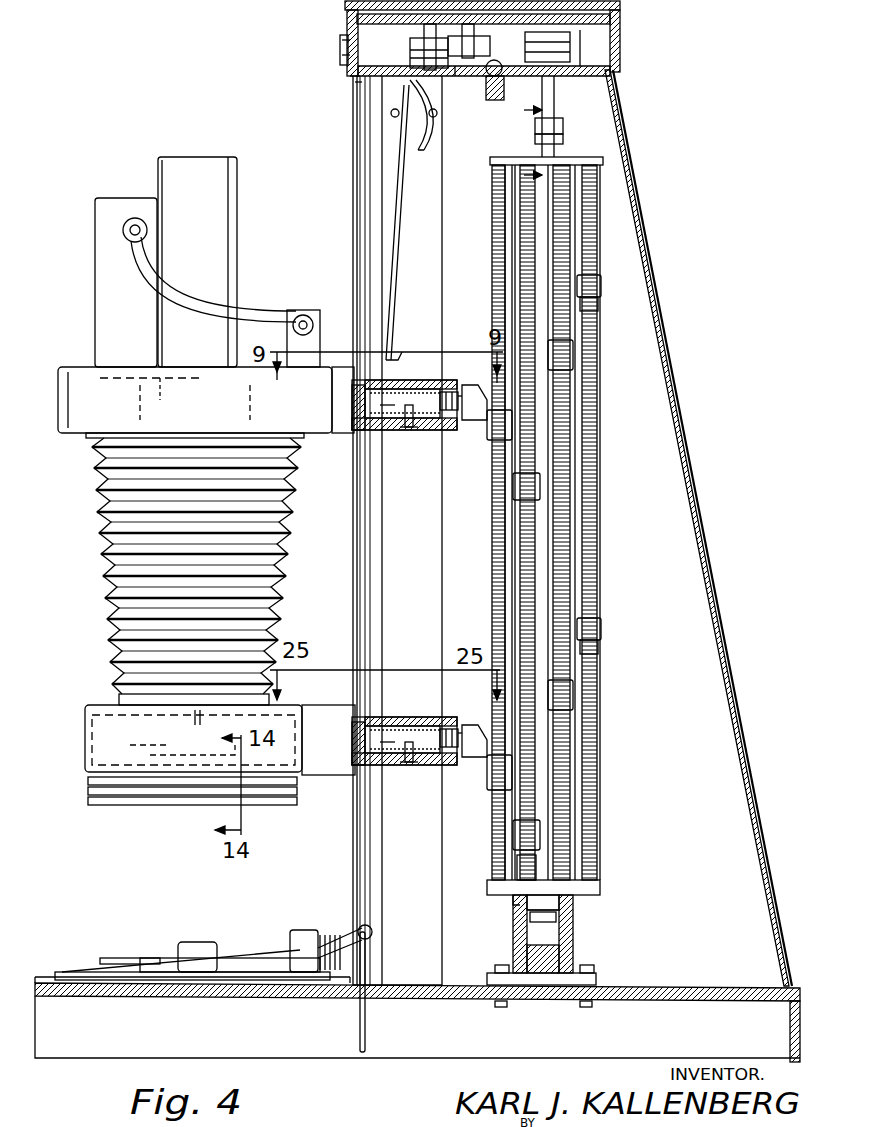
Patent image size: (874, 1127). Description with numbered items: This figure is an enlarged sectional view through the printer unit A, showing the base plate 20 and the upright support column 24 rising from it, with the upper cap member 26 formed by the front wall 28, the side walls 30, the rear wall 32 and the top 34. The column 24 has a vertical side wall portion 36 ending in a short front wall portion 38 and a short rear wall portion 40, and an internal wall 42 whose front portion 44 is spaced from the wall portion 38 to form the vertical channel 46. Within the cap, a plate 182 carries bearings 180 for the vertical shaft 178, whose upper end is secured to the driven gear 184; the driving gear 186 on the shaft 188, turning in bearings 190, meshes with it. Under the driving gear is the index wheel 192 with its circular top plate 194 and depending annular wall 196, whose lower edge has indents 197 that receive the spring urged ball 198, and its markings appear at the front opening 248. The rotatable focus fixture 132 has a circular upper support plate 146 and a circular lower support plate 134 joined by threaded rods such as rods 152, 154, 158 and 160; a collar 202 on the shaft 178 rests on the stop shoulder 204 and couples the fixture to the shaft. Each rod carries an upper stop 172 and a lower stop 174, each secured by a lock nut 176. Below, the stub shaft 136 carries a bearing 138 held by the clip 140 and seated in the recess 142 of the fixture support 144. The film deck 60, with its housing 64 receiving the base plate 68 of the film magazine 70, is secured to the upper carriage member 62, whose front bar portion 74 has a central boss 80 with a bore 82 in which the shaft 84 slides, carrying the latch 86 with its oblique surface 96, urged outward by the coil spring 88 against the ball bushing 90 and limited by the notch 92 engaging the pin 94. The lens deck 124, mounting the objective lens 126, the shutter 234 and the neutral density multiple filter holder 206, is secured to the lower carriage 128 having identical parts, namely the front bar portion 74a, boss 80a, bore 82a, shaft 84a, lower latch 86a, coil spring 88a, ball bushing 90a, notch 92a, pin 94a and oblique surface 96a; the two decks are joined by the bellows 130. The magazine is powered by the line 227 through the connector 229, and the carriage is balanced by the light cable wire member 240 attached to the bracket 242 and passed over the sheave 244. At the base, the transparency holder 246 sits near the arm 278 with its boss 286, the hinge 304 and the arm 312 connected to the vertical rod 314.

The top 34 is at (345, 7).
The driven gear 184 is at (612, 22).
The rear wall 32 is at (620, 52).
The side walls 30 is at (600, 34).
The bearings 180 is at (585, 44).
The driving gear 186 is at (347, 20).
The indents 197 is at (469, 41).
The annular wall 196 is at (535, 47).
The circular top plate 194 is at (342, 40).
The front opening 248 is at (343, 46).
The front wall 28 is at (343, 56).
The index wheel 192 is at (352, 72).
The shaft 188 is at (358, 80).
The bearings 190 is at (453, 78).
The spring urged ball 198 is at (488, 76).
The plate 182 is at (504, 96).
The vertical shaft 178 is at (555, 106).
The collar 202 is at (563, 128).
The stop shoulder 204 is at (563, 140).
The upper cap member 26 is at (622, 66).
The base plate 20 is at (402, 985).
The short front wall portion 38 is at (353, 527).
The vertical channel 46 is at (360, 256).
The front portion 44 is at (382, 562).
The internal wall 42 is at (418, 540).
The light cable wire member 240 is at (398, 250).
The sheave 244 is at (420, 150).
The bracket 242 is at (392, 352).
The circular upper support plate 146 is at (490, 161).
The fixture rod 160 is at (492, 222).
The fixture rod 158 is at (520, 252).
The fixture rod 154 is at (570, 402).
The fixture rod 152 is at (597, 328).
The rotatable focus fixture 132 is at (602, 722).
The vertical side wall portion 36 is at (648, 545).
The upper stop 172 is at (601, 286).
The lock nut 176 is at (598, 304).
The lower stop 174 is at (601, 628).
The circular lower support plate 134 is at (600, 882).
The fixture support 144 is at (513, 936).
The bearing 138 is at (560, 902).
The clip 140 is at (560, 912).
The stub shaft 136 is at (557, 924).
The recess 142 is at (513, 903).
The short rear wall portion 40 is at (692, 494).
The upright support column 24 is at (700, 620).
The printer unit A is at (672, 298).
The film magazine 70 is at (158, 172).
The line 227 is at (182, 300).
The connector 229 is at (308, 314).
The film deck 60 is at (70, 364).
The housing 64 is at (58, 410).
The base plate 68 is at (169, 396).
The upper carriage member 62 is at (340, 436).
The bellows 130 is at (104, 566).
The lens deck 124 is at (85, 730).
The objective lens 126 is at (150, 752).
The shutter 234 is at (150, 755).
The lower carriage 128 is at (328, 776).
The neutral density multiple filter holder 206 is at (90, 804).
The front bar portion 74 is at (352, 406).
The bore 82 is at (405, 390).
The shaft 84 is at (433, 392).
The coil spring 88 is at (462, 392).
The oblique surface 96 is at (478, 398).
The latch 86 is at (474, 420).
The central boss 80 is at (462, 425).
The ball bushing 90 is at (412, 426).
The notch 92 is at (410, 430).
The pin 94 is at (395, 418).
The front bar portion 74a is at (352, 718).
The bore 82a is at (405, 727).
The shaft 84a is at (430, 727).
The coil spring 88a is at (462, 728).
The oblique surface 96a is at (478, 733).
The lower latch 86a is at (474, 757).
The central boss 80a is at (462, 765).
The ball bushing 90a is at (412, 762).
The notch 92a is at (410, 764).
The pin 94a is at (395, 754).
The boss 286 is at (192, 942).
The hinge 304 is at (305, 930).
The arm 278 is at (268, 958).
The transparency holder 246 is at (235, 946).
The arm 312 is at (370, 928).
The vertical rod 314 is at (366, 1022).